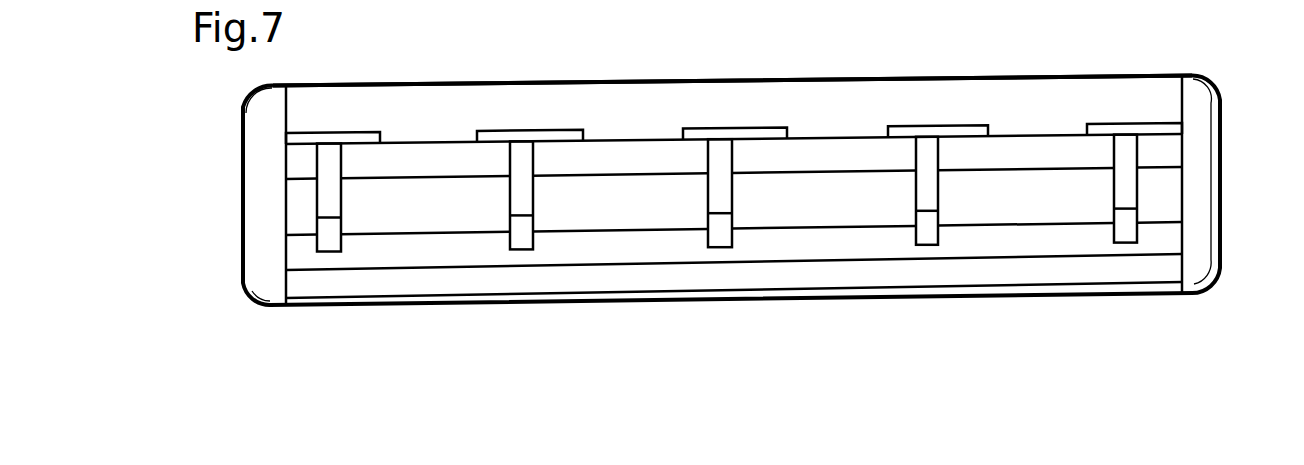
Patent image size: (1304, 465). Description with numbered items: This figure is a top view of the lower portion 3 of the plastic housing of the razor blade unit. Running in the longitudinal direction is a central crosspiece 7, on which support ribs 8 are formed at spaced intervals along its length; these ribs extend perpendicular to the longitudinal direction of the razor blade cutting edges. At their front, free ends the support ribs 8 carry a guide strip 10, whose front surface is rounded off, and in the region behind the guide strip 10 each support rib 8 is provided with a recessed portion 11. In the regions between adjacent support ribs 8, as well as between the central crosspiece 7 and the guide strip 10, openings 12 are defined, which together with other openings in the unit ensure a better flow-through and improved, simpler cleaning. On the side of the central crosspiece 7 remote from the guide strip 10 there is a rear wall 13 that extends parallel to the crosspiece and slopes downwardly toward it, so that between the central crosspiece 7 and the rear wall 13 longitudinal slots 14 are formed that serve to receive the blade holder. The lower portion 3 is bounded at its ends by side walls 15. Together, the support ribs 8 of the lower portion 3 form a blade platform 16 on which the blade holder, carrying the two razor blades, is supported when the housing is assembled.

The lower portion 3 is at (744, 191).
The central crosspiece 7 is at (607, 152).
The support ribs 8 is at (715, 155).
The guide strip 10 is at (837, 287).
The recessed portion 11 is at (720, 240).
The openings 12 is at (462, 222).
The rear wall 13 is at (397, 95).
The longitudinal slots 14 is at (965, 128).
The side walls 15 is at (255, 199).
The blade platform 16 is at (1163, 186).